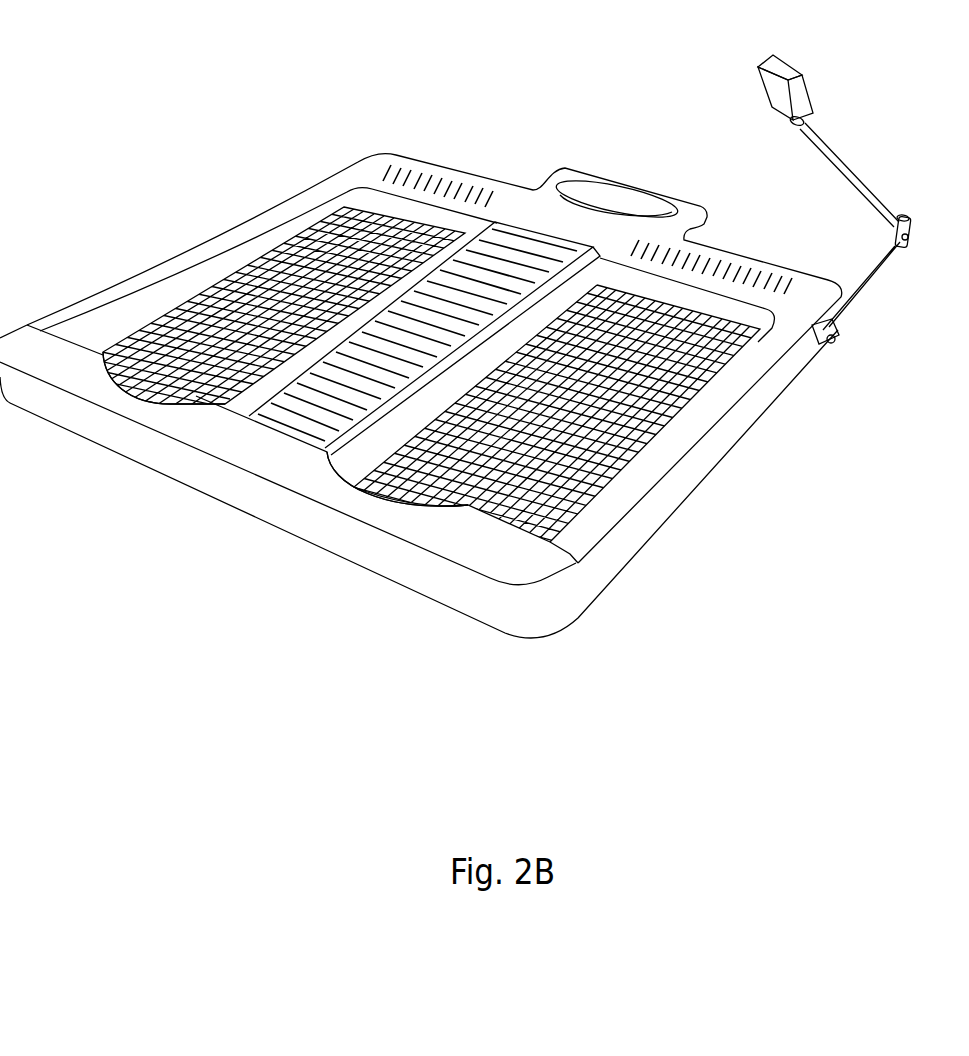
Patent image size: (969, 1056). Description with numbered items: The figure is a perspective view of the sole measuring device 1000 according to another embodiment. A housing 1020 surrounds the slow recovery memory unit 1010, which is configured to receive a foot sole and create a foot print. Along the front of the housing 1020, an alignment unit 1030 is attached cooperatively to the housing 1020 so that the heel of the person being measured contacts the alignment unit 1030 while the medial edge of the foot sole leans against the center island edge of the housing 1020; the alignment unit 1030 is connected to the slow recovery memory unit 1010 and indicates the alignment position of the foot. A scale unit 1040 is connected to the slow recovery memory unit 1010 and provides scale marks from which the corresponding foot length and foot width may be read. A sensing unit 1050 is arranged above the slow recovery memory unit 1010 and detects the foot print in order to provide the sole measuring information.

The sole measuring device 1000 is at (222, 102).
The slow recovery memory unit 1010 is at (247, 287).
The housing 1020 is at (276, 216).
The alignment unit 1030 is at (123, 386).
The scale unit 1040 is at (437, 180).
The sensing unit 1050 is at (757, 65).